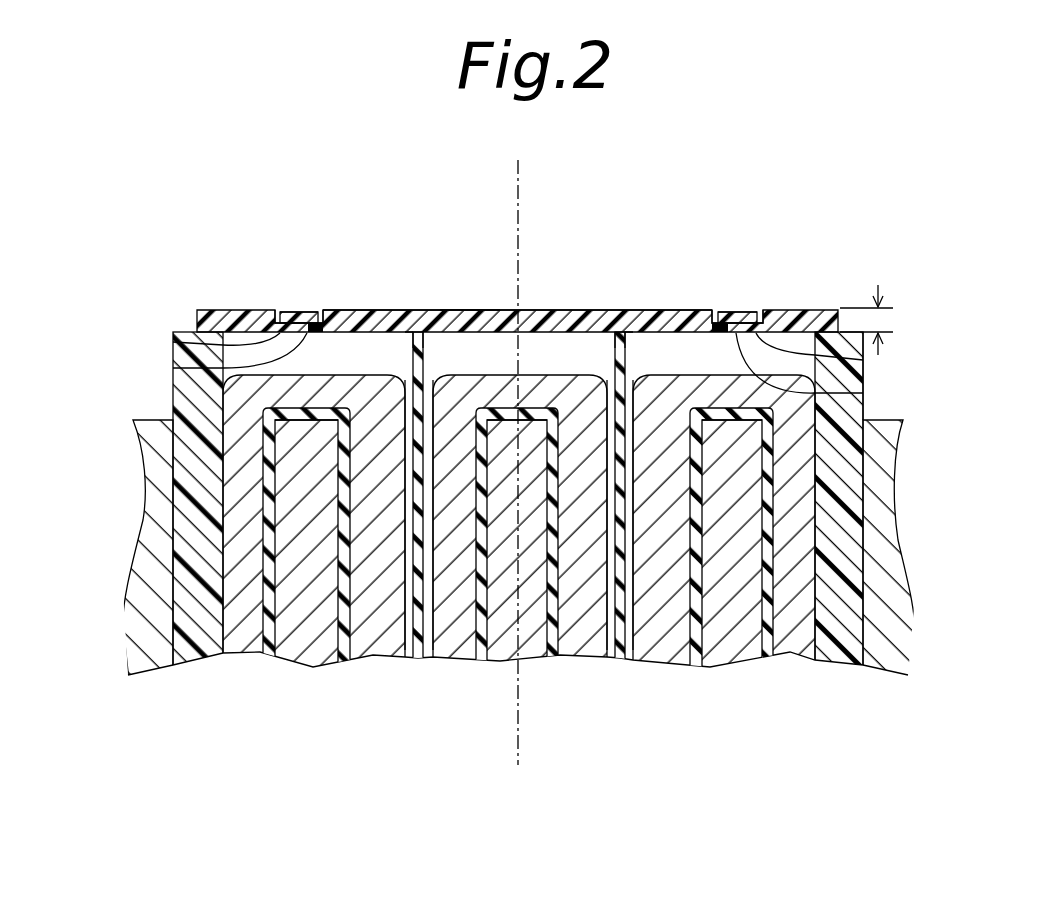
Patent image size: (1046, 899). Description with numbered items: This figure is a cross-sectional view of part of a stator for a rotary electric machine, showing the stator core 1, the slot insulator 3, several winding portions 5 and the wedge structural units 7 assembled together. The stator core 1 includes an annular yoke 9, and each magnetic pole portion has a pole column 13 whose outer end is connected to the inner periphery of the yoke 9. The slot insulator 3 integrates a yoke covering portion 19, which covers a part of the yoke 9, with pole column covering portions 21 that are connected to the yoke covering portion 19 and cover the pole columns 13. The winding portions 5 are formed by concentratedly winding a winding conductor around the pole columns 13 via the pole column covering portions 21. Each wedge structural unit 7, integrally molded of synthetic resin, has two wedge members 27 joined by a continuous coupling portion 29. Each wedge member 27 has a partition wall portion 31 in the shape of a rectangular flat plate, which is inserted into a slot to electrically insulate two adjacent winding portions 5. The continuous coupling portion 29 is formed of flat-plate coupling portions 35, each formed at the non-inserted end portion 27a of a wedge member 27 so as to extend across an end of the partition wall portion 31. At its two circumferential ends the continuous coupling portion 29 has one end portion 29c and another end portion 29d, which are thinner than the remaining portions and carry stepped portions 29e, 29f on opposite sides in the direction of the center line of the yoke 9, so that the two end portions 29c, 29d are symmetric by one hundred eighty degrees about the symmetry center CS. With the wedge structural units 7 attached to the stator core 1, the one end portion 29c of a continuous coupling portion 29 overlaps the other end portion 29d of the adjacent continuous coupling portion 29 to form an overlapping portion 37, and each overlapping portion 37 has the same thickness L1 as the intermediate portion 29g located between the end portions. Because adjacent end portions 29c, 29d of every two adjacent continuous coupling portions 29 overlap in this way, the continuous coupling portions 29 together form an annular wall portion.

The stator core 1 is at (126, 546).
The slot insulator 3 is at (829, 443).
The winding portion 5 is at (375, 650).
The wedge structural unit 7 is at (189, 297).
The yoke 9 is at (152, 473).
The pole column 13 is at (308, 662).
The yoke covering portion 19 is at (173, 402).
The pole column covering portion 21 is at (270, 655).
The wedge member 27 is at (426, 348).
The non-inserted end portion 27a is at (412, 330).
The continuous coupling portion 29 is at (506, 300).
The one end portion 29c is at (173, 368).
The other end portion 29d is at (292, 308).
The stepped portion 29e is at (317, 308).
The stepped portion 29f is at (173, 342).
The intermediate portion 29g is at (467, 308).
The partition wall portion 31 is at (420, 655).
The coupling portion 35 is at (418, 335).
The overlapping portion 37 is at (303, 303).
The symmetry center CS is at (543, 462).
The thickness L1 is at (882, 320).